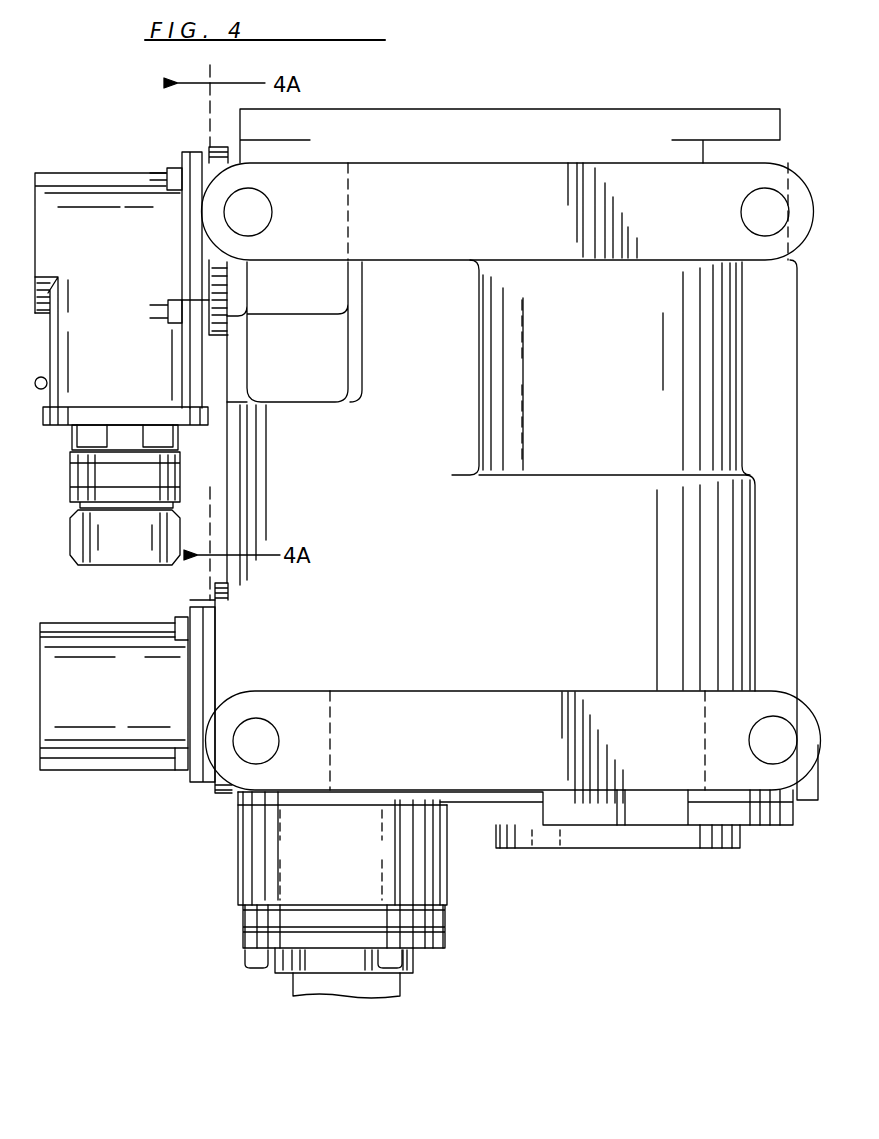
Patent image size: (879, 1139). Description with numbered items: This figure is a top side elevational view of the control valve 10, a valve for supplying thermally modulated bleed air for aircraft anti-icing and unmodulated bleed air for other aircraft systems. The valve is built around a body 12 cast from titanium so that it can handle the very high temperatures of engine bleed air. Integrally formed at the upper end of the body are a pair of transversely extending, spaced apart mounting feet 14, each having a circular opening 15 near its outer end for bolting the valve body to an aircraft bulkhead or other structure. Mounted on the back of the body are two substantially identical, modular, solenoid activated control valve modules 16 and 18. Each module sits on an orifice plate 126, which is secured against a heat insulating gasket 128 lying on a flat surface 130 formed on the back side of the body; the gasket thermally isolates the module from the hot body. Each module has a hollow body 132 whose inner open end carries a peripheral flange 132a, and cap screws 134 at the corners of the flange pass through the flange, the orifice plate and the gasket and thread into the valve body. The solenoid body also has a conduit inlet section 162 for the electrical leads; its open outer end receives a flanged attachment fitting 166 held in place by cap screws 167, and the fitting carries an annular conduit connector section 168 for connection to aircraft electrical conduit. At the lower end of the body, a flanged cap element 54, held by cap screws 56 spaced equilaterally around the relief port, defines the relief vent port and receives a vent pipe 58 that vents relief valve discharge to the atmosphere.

The control valve 10 is at (175, 853).
The valve body 12 is at (426, 568).
The mounting feet 14 is at (510, 197).
The circular opening 15 is at (258, 238).
The solenoid activated control valve module 16 is at (98, 674).
The solenoid activated control valve module 18 is at (118, 182).
The flanged cap element 54 is at (425, 933).
The cap screws 56 is at (248, 968).
The vent pipe 58 is at (318, 978).
The orifice plate 126 is at (200, 152).
The heat insulating gasket 128 is at (212, 262).
The flat surface 130 is at (227, 463).
The hollow body 132 is at (82, 240).
The peripheral flange 132a is at (192, 315).
The cap screws 134 is at (172, 170).
The conduit inlet section 162 is at (45, 378).
The attachment fitting 166 is at (70, 432).
The cap screws 167 is at (94, 432).
The conduit connector section 168 is at (72, 525).